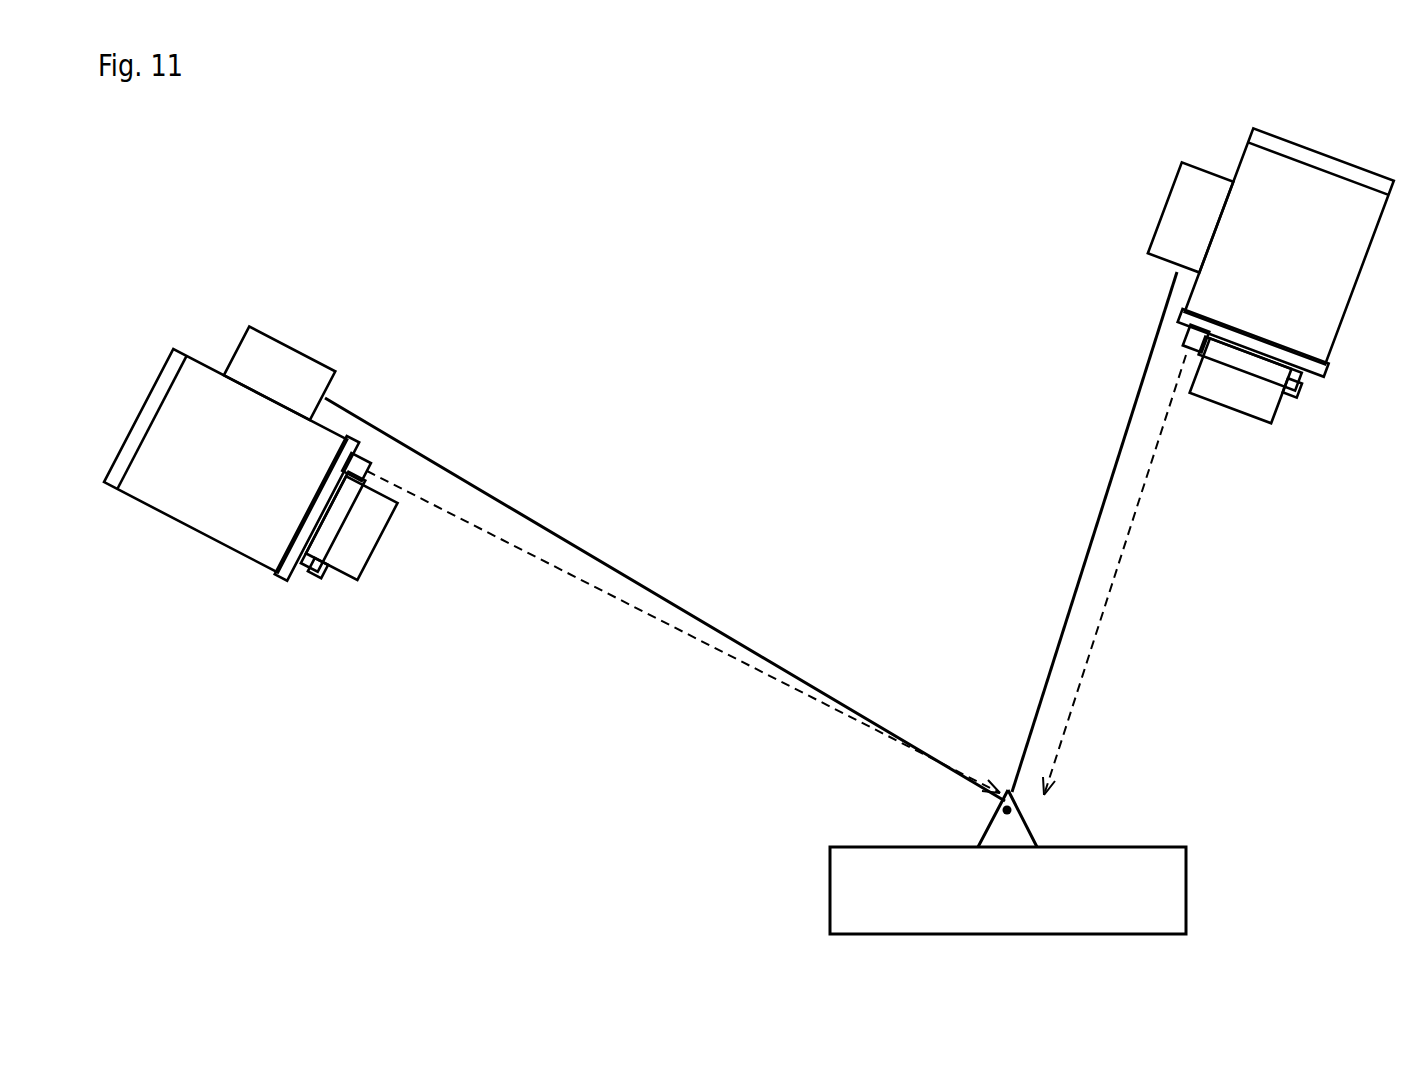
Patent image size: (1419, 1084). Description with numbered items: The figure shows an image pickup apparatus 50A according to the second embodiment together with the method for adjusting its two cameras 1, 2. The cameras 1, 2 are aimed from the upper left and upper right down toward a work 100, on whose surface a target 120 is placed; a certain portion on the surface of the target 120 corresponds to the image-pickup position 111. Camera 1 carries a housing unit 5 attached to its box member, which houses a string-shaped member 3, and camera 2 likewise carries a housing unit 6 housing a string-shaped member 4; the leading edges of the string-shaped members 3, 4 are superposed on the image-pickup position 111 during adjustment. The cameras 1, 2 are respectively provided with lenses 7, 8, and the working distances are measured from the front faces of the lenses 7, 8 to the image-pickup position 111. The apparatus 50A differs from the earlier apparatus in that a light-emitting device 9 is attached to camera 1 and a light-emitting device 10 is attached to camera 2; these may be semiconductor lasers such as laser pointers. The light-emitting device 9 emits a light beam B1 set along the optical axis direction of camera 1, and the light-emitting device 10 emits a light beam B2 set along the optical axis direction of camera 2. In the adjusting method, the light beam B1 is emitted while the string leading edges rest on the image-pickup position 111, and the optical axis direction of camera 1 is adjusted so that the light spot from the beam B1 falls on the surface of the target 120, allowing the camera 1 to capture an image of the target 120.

The camera 1 is at (129, 333).
The camera 2 is at (1357, 122).
The string-shaped member 3 is at (705, 625).
The string-shaped member 4 is at (1072, 595).
The housing unit 5 is at (283, 358).
The housing unit 6 is at (1175, 210).
The lens 7 is at (297, 572).
The lens 8 is at (1312, 378).
The light-emitting device 9 is at (363, 455).
The light-emitting device 10 is at (1187, 340).
The image pickup apparatus 50A is at (755, 188).
The work 100 is at (1187, 889).
The image-pickup position 111 is at (1000, 812).
The target 120 is at (1017, 827).
The light beam B1 is at (515, 546).
The light beam B2 is at (1110, 598).